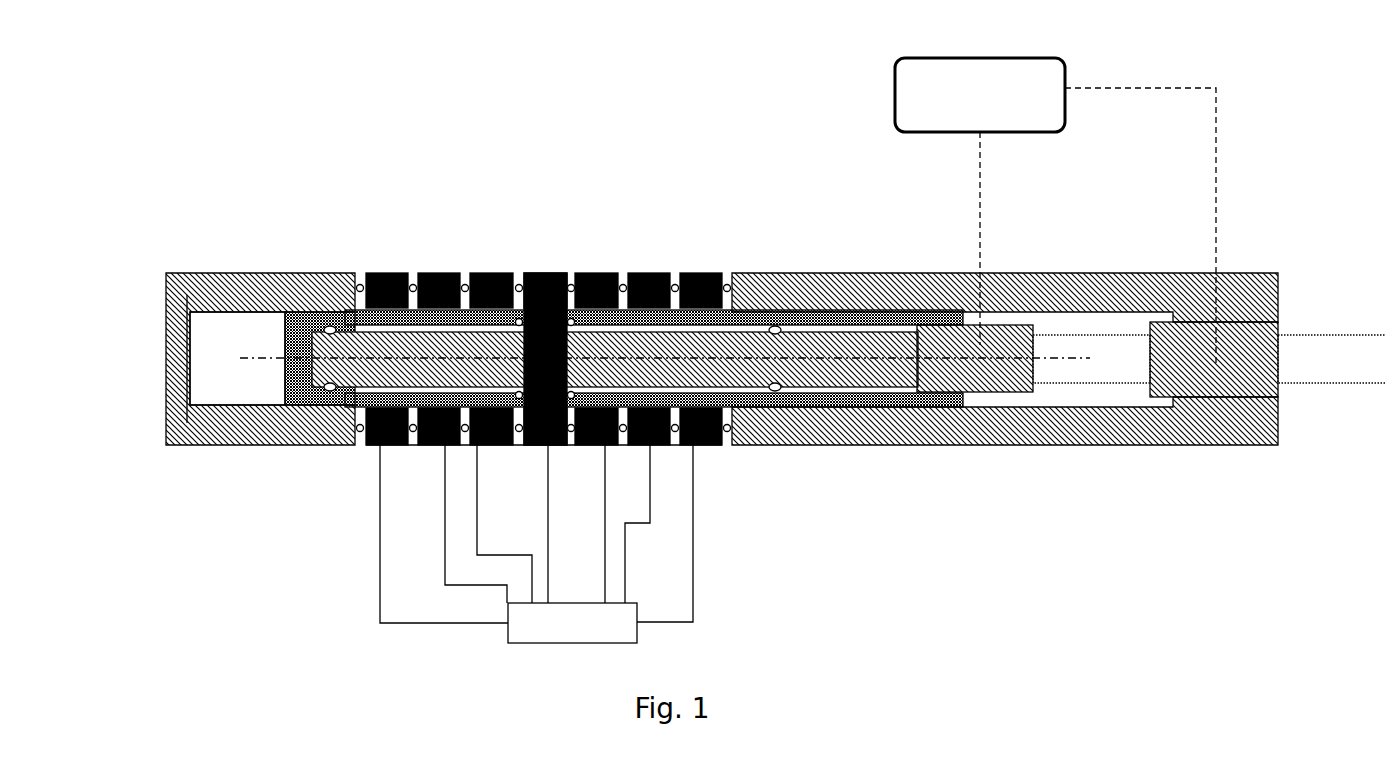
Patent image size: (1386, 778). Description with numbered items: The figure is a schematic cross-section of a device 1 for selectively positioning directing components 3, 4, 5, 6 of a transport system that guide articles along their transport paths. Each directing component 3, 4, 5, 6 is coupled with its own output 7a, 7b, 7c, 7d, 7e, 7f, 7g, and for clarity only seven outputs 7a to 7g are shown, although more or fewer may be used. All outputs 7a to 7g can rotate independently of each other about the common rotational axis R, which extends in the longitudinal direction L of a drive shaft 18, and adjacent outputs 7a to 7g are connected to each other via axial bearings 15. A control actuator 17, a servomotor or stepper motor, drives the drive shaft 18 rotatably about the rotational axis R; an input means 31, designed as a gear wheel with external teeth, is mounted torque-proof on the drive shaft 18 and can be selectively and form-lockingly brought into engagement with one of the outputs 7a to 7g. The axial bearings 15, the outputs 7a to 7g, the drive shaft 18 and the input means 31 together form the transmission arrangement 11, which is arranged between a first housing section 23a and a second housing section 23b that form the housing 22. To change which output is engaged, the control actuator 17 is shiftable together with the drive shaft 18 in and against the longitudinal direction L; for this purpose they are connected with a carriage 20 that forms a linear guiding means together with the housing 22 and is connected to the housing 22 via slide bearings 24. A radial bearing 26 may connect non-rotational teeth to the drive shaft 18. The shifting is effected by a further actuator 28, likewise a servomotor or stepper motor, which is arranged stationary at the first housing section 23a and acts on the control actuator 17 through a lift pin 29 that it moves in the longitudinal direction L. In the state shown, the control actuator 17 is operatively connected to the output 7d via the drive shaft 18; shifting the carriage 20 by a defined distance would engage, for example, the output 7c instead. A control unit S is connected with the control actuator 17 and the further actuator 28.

The device 1 is at (366, 617).
The directing component 3 is at (536, 544).
The directing component 4 is at (536, 544).
The directing component 5 is at (536, 544).
The directing component 6 is at (536, 544).
The output 7a is at (408, 277).
The output 7b is at (452, 277).
The output 7c is at (507, 277).
The output 7d is at (567, 277).
The output 7e is at (620, 277).
The output 7f is at (662, 277).
The output 7g is at (713, 277).
The transmission arrangement 11 is at (470, 116).
The axial bearing 15 is at (523, 445).
The control actuator 17 is at (997, 345).
The drive shaft 18 is at (427, 445).
The carriage 20 is at (370, 447).
The housing 22 is at (262, 277).
The first housing section 23a is at (1023, 425).
The second housing section 23b is at (188, 293).
The slide bearing 24 is at (828, 313).
The radial bearing 26 is at (330, 328).
The further actuator 28 is at (1233, 370).
The lift pin 29 is at (1108, 358).
The input means 31 is at (557, 375).
The control unit S is at (1055, 211).
The rotational axis R is at (233, 427).
The longitudinal direction L is at (277, 358).